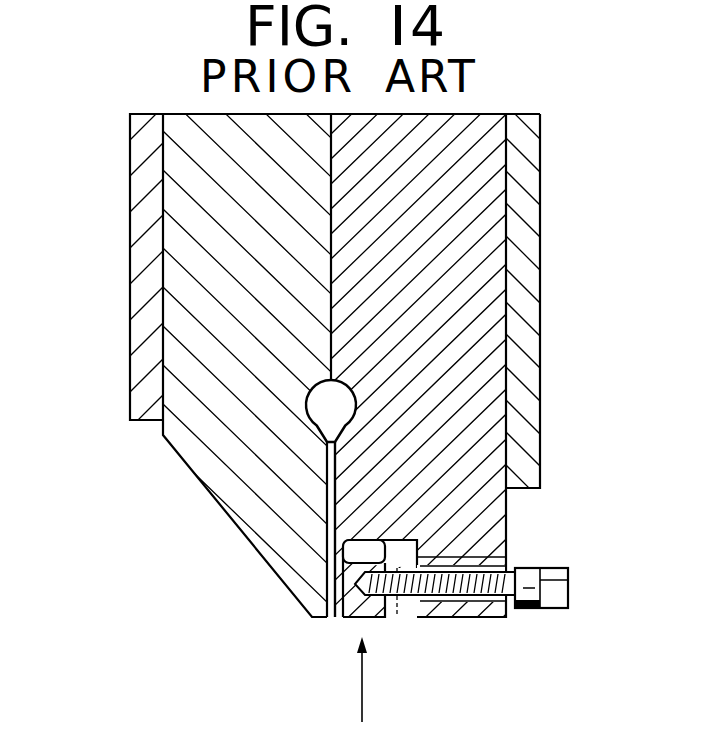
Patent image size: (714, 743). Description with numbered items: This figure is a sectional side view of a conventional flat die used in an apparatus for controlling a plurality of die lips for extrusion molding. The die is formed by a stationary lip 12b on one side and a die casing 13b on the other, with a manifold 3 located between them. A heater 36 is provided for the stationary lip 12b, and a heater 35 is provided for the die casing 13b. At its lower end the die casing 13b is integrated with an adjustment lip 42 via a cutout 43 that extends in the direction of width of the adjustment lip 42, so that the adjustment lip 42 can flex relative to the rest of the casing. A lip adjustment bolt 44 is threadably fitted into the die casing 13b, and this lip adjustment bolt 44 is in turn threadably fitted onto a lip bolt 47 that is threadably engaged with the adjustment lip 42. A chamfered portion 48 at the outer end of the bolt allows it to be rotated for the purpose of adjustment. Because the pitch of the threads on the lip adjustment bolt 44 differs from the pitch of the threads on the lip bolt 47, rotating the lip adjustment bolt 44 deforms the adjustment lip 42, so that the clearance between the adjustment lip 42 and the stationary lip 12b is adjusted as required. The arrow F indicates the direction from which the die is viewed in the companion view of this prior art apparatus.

The stationary lip 12b is at (177, 150).
The die casing 13b is at (490, 150).
The heater for the stationary lip 36 is at (140, 209).
The heater for the die casing 35 is at (532, 208).
The manifold 3 is at (322, 412).
The cutout 43 is at (350, 549).
The adjustment lip 42 is at (378, 610).
The lip bolt 47 is at (420, 563).
The lip adjustment bolt 44 is at (527, 600).
The chamfered portion 48 is at (570, 587).
The arrow-marked direction F is at (372, 679).